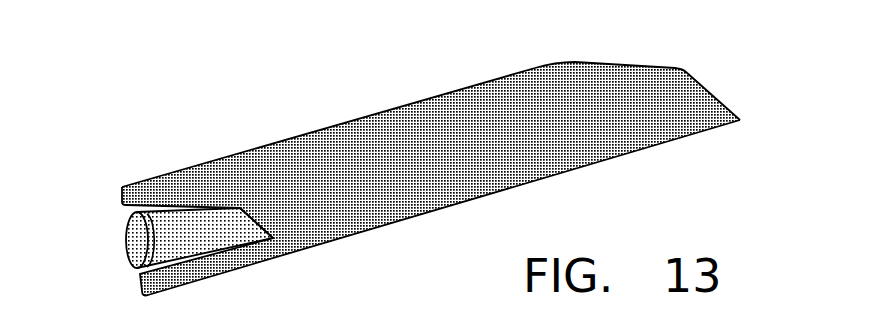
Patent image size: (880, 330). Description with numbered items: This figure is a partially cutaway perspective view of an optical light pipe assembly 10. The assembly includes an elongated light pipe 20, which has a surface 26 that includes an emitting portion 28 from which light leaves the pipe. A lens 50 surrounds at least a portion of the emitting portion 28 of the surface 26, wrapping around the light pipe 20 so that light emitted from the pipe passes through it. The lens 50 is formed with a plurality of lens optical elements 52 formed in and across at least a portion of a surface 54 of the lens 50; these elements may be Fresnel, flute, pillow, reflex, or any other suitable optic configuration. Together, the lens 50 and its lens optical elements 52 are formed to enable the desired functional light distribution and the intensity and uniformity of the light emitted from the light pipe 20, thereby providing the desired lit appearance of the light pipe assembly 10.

The optical light pipe assembly 10 is at (750, 76).
The light pipe 20 is at (188, 233).
The surface 26 is at (150, 240).
The emitting portion 28 is at (132, 210).
The lens 50 is at (622, 82).
The lens optical elements 52 is at (460, 90).
The surface of the lens 54 is at (355, 138).